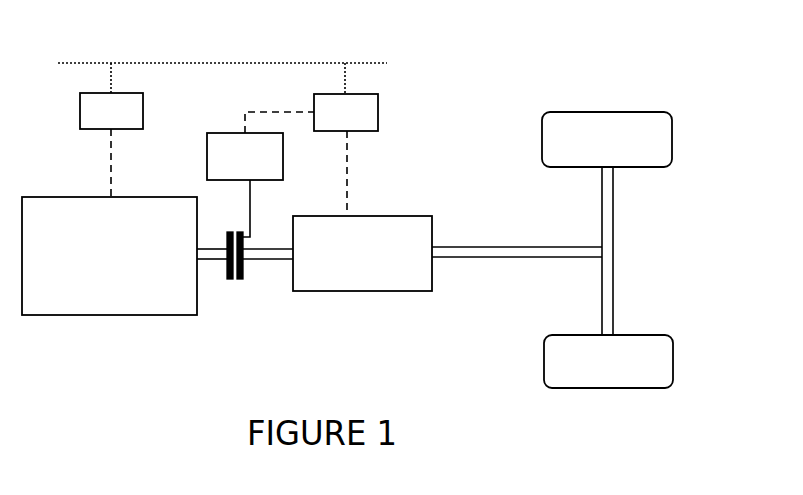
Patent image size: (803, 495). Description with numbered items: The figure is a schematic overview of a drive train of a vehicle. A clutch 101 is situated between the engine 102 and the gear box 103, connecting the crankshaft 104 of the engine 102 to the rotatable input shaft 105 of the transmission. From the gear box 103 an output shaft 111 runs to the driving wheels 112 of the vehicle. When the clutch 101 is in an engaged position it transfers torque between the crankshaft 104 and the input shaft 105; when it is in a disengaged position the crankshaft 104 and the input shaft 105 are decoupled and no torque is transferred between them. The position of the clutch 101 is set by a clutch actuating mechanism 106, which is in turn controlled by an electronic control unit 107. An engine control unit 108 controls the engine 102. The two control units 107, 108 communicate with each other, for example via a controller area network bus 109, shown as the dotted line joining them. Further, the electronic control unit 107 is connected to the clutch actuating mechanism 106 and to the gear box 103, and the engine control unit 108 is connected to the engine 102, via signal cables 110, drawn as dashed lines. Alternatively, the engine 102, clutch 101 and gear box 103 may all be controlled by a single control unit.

The clutch 101 is at (235, 282).
The engine 102 is at (109, 256).
The gear box 103 is at (362, 253).
The crankshaft 104 is at (213, 262).
The input shaft 105 is at (270, 262).
The clutch actuating mechanism 106 is at (260, 174).
The electronic control unit 107 is at (346, 139).
The engine control unit 108 is at (111, 130).
The controller area network (CAN) bus 109 is at (200, 63).
The signal cables 110 is at (113, 180).
The output shaft 111 is at (497, 258).
The driving wheels 112 is at (627, 150).